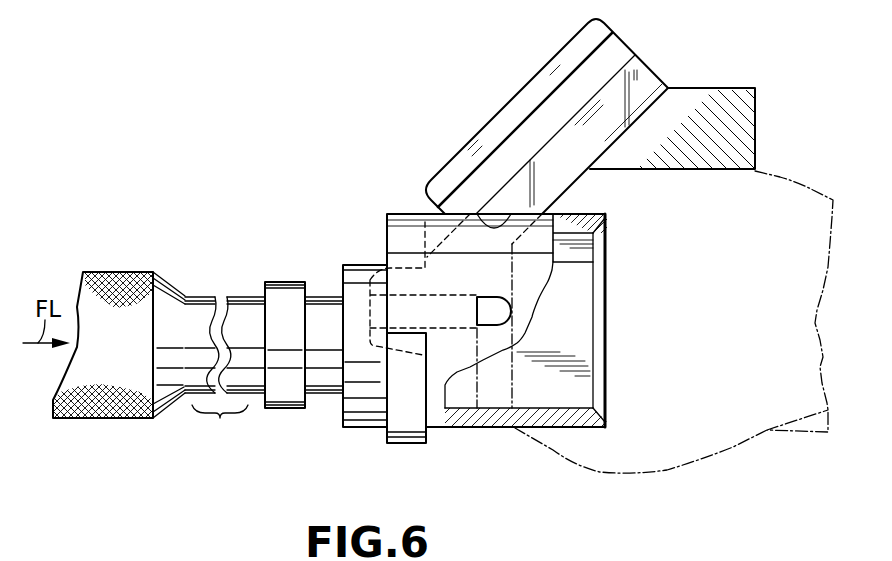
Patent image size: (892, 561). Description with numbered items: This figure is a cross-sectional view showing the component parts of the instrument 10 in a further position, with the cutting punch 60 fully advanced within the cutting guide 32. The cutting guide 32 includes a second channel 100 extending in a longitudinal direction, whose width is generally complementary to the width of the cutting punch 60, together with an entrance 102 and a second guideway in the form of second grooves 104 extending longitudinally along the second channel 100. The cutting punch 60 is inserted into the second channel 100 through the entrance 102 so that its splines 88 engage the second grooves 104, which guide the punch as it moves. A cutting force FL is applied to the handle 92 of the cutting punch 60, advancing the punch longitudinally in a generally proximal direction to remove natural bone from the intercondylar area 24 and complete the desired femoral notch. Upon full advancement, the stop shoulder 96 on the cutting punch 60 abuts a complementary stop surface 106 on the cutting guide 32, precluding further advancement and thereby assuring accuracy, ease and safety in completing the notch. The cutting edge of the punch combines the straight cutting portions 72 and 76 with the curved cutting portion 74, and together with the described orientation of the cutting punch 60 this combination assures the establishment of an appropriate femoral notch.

The engine / mounting structure 10 is at (796, 171).
The intercondylar area 24 is at (595, 248).
The cutting guide 32 is at (668, 88).
The cutting punch 60 is at (388, 214).
The straight cutting portion 72 is at (608, 338).
The curved cutting portion 74 is at (608, 216).
The straight cutting portion 76 is at (610, 427).
The splines 88 is at (493, 313).
The handle 92 is at (88, 417).
The stop shoulder 96 is at (427, 392).
The second channel 100 is at (478, 213).
The entrance 102 is at (397, 287).
The second grooves 104 is at (410, 295).
The stop surface 106 is at (424, 368).